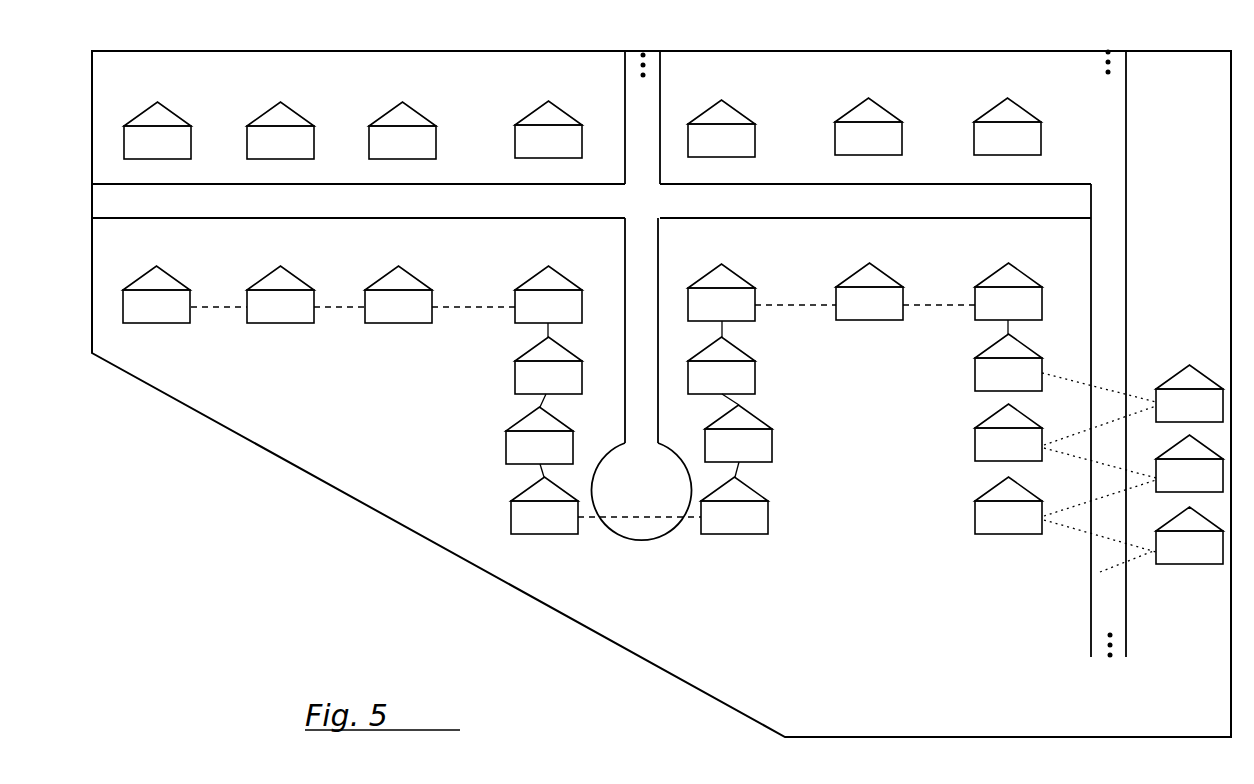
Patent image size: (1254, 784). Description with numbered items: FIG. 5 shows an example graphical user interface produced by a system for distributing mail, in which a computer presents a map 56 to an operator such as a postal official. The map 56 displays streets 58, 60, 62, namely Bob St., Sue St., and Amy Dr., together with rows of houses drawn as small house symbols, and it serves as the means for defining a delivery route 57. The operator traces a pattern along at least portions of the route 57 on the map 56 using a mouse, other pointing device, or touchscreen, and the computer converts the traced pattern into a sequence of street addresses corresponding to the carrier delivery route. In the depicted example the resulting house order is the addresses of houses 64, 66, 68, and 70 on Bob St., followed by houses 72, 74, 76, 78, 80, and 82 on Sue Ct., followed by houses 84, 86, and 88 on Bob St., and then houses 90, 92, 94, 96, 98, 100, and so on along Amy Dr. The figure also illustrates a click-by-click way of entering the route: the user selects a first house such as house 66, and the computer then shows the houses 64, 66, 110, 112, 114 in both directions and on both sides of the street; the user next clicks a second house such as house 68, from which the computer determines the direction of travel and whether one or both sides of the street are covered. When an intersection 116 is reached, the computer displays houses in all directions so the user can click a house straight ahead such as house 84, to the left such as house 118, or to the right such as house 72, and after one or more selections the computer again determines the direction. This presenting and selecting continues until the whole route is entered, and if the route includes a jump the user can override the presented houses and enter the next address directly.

The map 56 is at (1180, 60).
The delivery route 57 is at (466, 308).
The street 58 is at (440, 184).
The street 60 is at (658, 101).
The street 62 is at (1127, 338).
The house 64 is at (142, 318).
The house 66 is at (266, 318).
The house 68 is at (384, 318).
The house 70 is at (534, 318).
The house 72 is at (534, 390).
The house 74 is at (554, 460).
The house 76 is at (530, 530).
The house 78 is at (720, 530).
The house 80 is at (724, 458).
The house 82 is at (736, 390).
The house 84 is at (736, 316).
The house 86 is at (884, 316).
The house 88 is at (994, 316).
The house 90 is at (994, 386).
The house 92 is at (1204, 418).
The house 94 is at (994, 456).
The house 96 is at (1204, 488).
The house 98 is at (994, 530).
The house 100 is at (1172, 560).
The house 110 is at (172, 154).
The house 112 is at (266, 154).
The house 114 is at (388, 154).
The intersection 116 is at (534, 154).
The house 118 is at (736, 152).